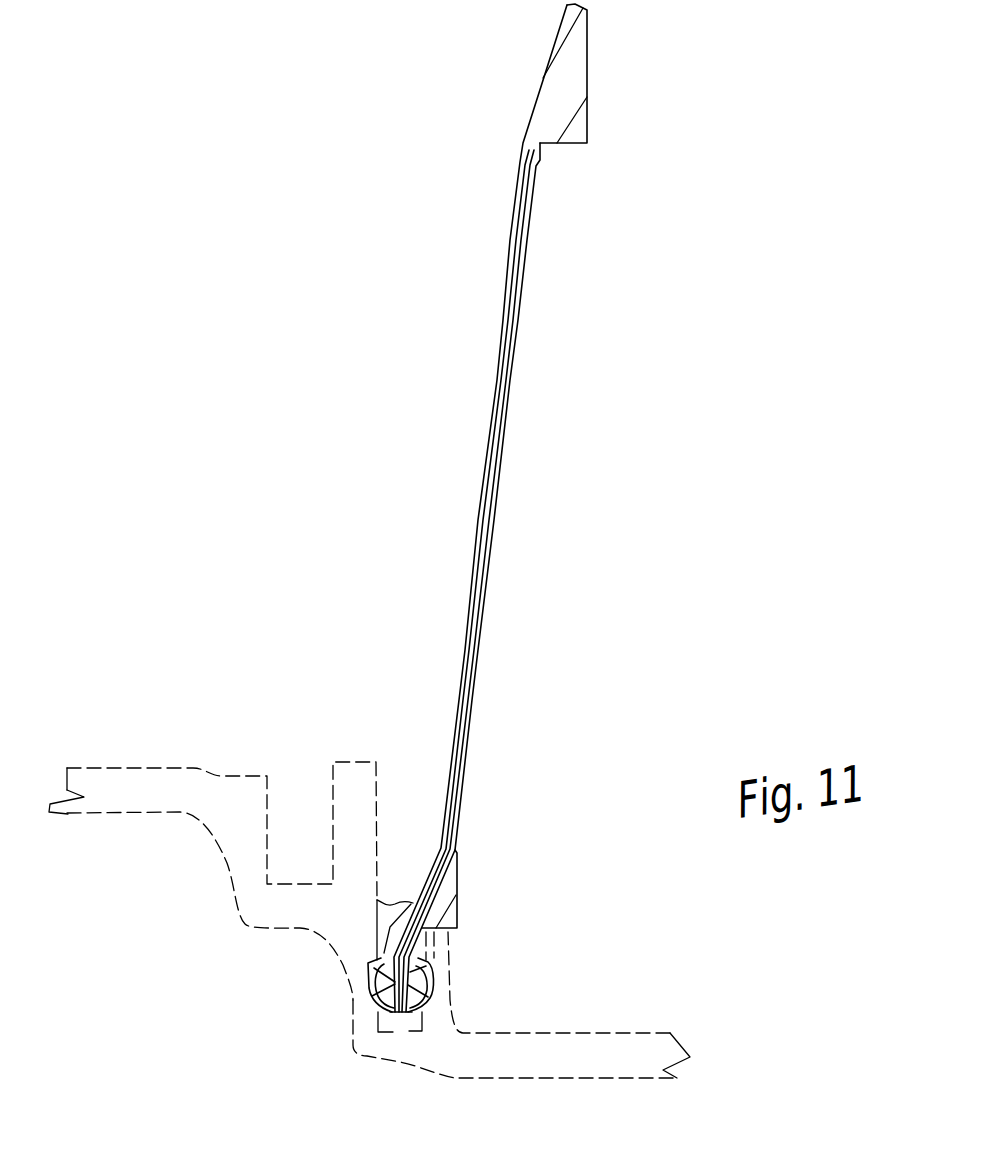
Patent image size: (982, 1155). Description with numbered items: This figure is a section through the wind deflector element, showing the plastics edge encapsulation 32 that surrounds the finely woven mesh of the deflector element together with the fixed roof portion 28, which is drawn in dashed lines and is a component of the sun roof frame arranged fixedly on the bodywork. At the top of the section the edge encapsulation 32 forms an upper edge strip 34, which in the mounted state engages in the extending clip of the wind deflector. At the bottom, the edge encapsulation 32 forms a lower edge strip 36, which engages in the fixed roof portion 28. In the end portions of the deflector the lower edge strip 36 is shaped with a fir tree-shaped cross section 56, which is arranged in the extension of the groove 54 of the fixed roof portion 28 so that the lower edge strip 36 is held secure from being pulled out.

The fixed roof portion 28 is at (233, 784).
The plastics edge encapsulation 32 is at (485, 593).
The upper edge strip 34 is at (573, 90).
The lower edge strip 36 is at (457, 910).
The groove 54 is at (405, 1028).
The fir tree-shaped cross section 56 is at (380, 989).